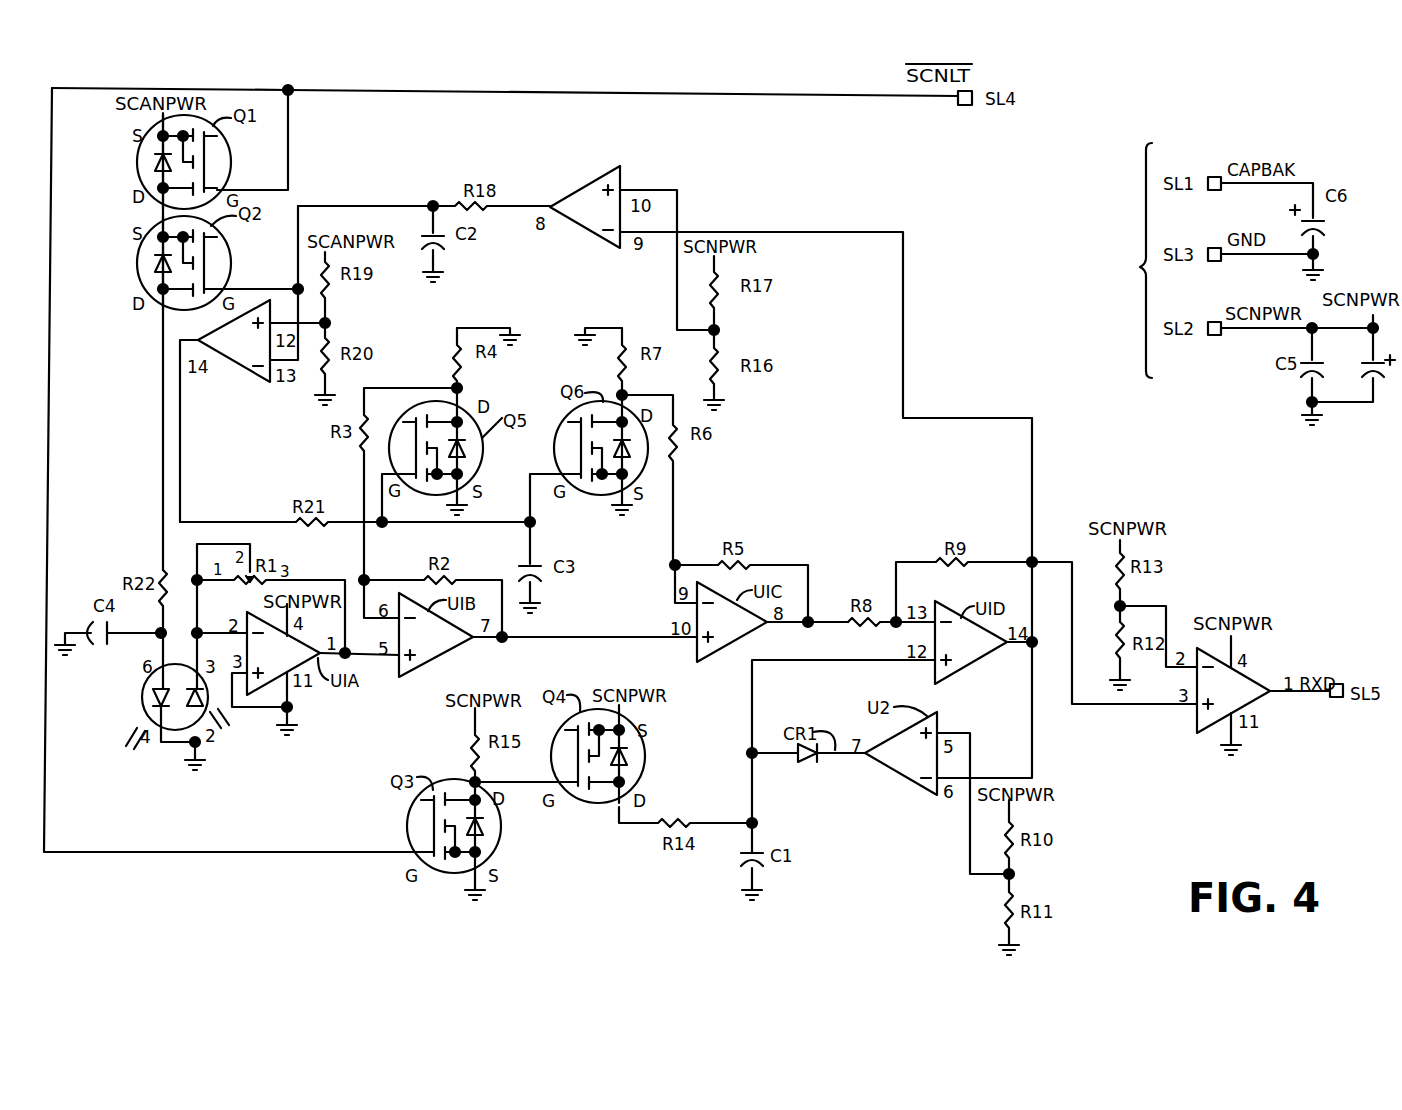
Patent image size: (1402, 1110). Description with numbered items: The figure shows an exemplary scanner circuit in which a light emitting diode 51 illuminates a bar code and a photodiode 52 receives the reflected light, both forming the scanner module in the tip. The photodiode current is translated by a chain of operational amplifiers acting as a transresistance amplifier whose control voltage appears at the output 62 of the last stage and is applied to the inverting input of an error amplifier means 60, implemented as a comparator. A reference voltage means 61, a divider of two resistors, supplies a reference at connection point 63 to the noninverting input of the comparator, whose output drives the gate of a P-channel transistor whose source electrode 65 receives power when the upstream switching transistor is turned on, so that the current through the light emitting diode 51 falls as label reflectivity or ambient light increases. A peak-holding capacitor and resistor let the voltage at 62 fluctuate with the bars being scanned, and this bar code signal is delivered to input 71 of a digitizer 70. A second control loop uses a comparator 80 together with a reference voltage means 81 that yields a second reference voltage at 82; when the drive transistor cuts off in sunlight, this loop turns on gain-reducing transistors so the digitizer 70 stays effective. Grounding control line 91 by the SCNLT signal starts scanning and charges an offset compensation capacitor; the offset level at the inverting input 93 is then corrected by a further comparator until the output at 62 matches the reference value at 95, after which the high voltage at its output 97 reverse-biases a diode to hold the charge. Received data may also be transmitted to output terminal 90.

The light emitting diode 51 is at (143, 699).
The photodiode 52 is at (211, 706).
The error amplifier means 60 is at (607, 167).
The reference voltage means 61 is at (722, 328).
The output of amplifier U1D 62 is at (1032, 638).
The connection point 63 is at (722, 334).
The source electrode of transistor Q2 65 is at (138, 252).
The digitizer 70 is at (1200, 647).
The input of digitizer 71 is at (1120, 707).
The comparator 80 is at (242, 368).
The reference voltage means of the second loop 81 is at (334, 308).
The second reference voltage point 82 is at (345, 324).
The output terminal 90 is at (1337, 684).
The control line 91 is at (762, 95).
The inverting input of amplifier U1D 93 is at (809, 624).
The reference value 95 is at (1016, 875).
The output of comparator U2 97 is at (838, 756).